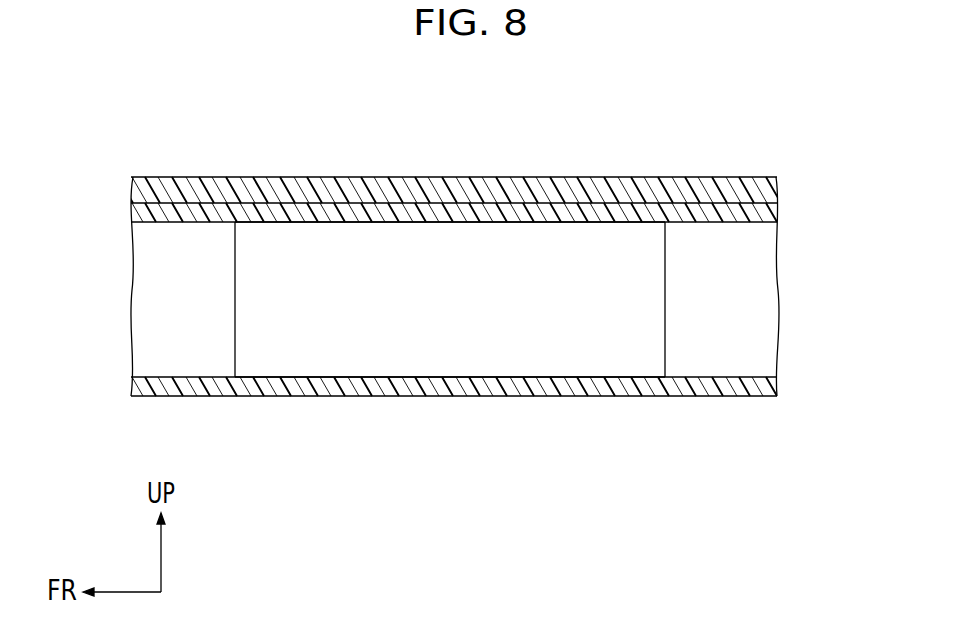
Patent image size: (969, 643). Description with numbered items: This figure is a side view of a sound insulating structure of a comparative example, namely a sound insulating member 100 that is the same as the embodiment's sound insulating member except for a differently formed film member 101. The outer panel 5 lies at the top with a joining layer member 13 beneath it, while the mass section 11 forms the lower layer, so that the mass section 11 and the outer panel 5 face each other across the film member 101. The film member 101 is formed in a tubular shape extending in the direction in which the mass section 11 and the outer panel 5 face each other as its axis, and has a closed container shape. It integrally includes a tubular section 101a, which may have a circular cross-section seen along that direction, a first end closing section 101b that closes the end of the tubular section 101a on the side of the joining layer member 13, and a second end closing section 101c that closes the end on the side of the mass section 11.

The outer panel 5 is at (420, 177).
The joining layer member 13 is at (737, 205).
The mass section 11 is at (242, 396).
The sound insulating member 100 is at (311, 196).
The film member 101 is at (676, 296).
The tubular section 101a is at (235, 275).
The first end closing section 101b is at (498, 218).
The second end closing section 101c is at (372, 380).